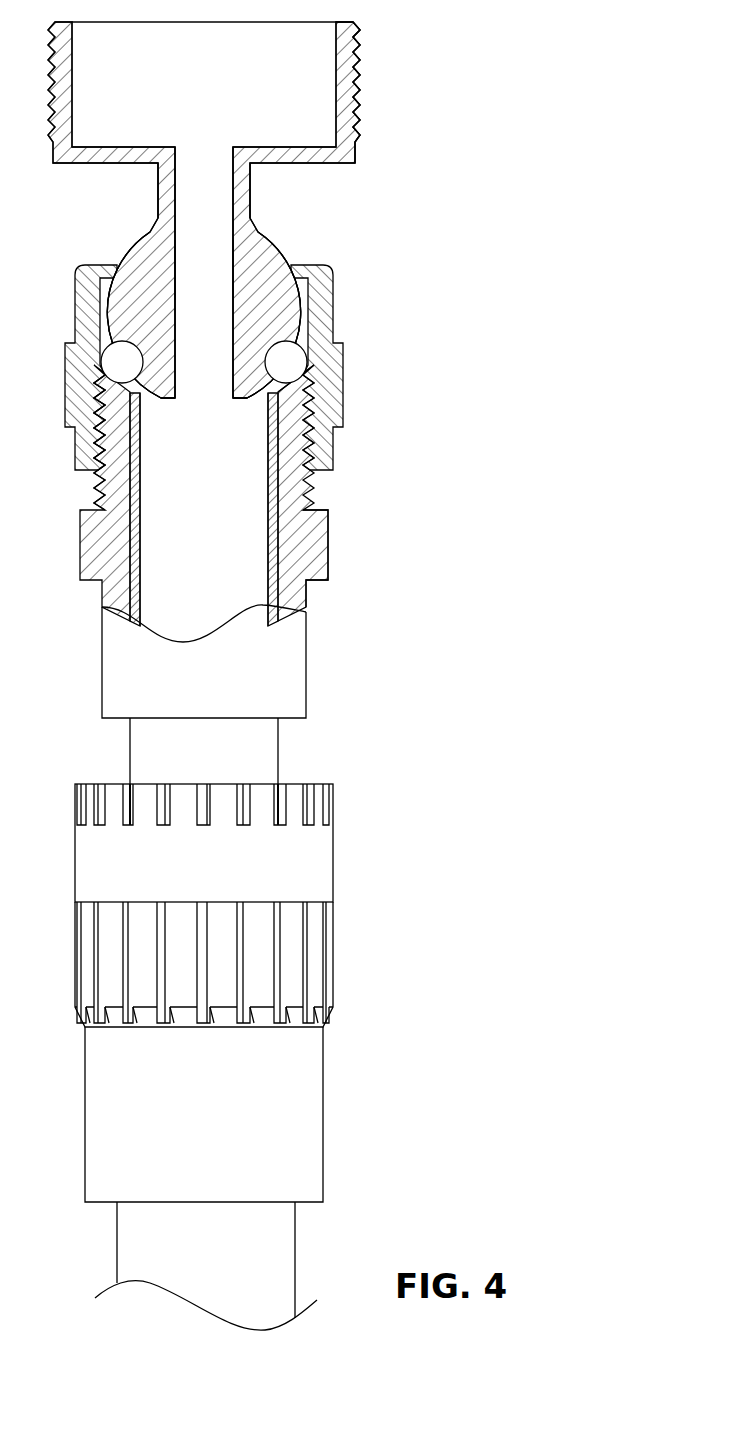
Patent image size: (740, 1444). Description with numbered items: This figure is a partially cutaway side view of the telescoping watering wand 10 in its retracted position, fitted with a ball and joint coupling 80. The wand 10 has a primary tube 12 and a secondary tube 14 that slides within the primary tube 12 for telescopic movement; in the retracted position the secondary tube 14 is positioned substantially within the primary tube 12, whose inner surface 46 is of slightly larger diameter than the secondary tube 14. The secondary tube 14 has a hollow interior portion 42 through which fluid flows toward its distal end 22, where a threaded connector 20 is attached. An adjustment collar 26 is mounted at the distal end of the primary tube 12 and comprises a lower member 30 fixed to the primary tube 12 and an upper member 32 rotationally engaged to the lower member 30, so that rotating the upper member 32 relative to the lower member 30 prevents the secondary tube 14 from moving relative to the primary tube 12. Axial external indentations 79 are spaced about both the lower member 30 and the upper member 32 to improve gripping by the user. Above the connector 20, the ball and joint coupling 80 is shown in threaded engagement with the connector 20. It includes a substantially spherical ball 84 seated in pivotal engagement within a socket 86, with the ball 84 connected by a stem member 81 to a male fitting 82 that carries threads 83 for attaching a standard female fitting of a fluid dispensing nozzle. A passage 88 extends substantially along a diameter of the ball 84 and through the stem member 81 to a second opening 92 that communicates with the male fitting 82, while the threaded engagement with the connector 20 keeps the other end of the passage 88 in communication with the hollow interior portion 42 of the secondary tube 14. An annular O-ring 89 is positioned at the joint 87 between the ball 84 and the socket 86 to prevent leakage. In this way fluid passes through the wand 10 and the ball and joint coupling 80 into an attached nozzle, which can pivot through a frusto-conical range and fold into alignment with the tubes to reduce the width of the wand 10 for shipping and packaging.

The telescoping watering wand 10 is at (563, 105).
The primary tube 12 is at (283, 1258).
The secondary tube 14 is at (128, 577).
The connector 20 is at (318, 519).
The distal end of the secondary tube 22 is at (133, 507).
The adjustment collar 26 is at (356, 909).
The lower member 30 is at (318, 970).
The upper member 32 is at (318, 851).
The hollow interior portion of the secondary tube 42 is at (212, 553).
The inner surface of the primary tube 46 is at (278, 547).
The external indentations 79 is at (128, 826).
The ball and joint coupling 80 is at (346, 160).
The stem member 81 is at (158, 186).
The male fitting 82 is at (345, 92).
The threads 83 is at (357, 36).
The ball 84 is at (270, 250).
The socket 86 is at (303, 337).
The joint 87 is at (268, 382).
The passage 88 is at (217, 265).
The O-ring 89 is at (298, 362).
The second opening 92 is at (230, 158).